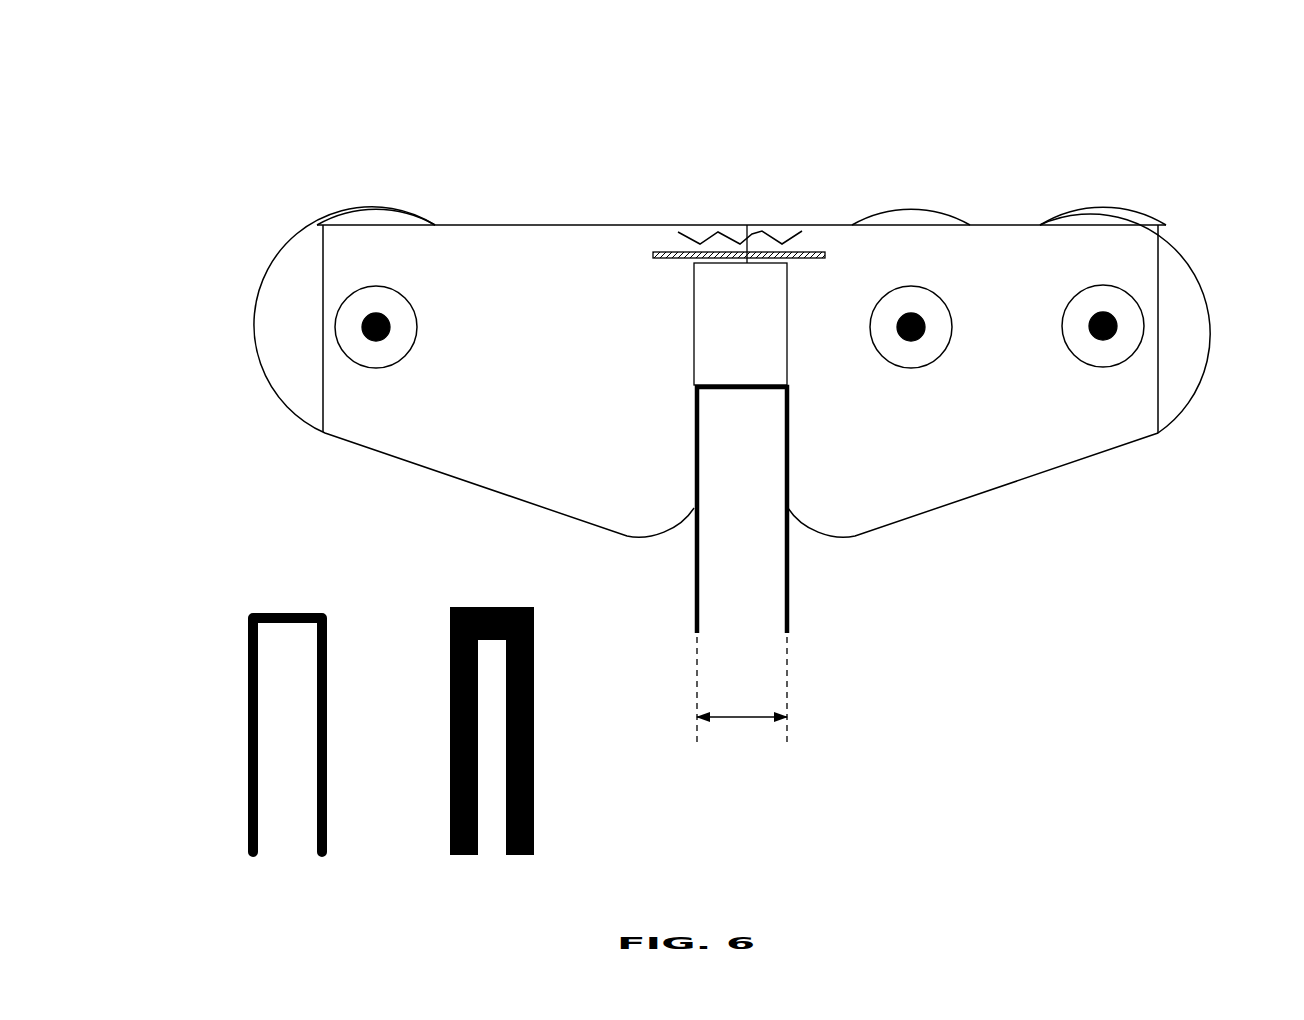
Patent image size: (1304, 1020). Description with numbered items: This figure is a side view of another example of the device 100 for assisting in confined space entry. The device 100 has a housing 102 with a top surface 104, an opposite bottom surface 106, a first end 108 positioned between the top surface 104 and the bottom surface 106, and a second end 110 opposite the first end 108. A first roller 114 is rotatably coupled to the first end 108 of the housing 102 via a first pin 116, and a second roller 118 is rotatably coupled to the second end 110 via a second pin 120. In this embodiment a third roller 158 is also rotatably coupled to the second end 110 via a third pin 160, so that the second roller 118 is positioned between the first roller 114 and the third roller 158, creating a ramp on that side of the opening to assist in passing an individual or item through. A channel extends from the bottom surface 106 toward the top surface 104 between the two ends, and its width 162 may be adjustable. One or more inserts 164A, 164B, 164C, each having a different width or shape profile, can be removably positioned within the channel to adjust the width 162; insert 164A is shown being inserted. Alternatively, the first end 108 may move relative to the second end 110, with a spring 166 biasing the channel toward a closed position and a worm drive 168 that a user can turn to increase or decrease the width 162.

The device 100 is at (150, 91).
The housing 102 is at (832, 245).
The top surface 104 is at (729, 221).
The bottom surface 106 is at (1014, 488).
The first end 108 is at (318, 327).
The second end 110 is at (1162, 327).
The first roller 114 is at (370, 208).
The first pin 116 is at (376, 327).
The second roller 118 is at (903, 208).
The second pin 120 is at (911, 327).
The third roller 158 is at (1130, 212).
The third pin 160 is at (1103, 326).
The width of the channel 162 is at (742, 718).
The insert 164A is at (697, 580).
The insert 164B is at (325, 716).
The insert 164C is at (534, 703).
The spring 166 is at (705, 238).
The worm drive 168 is at (653, 252).